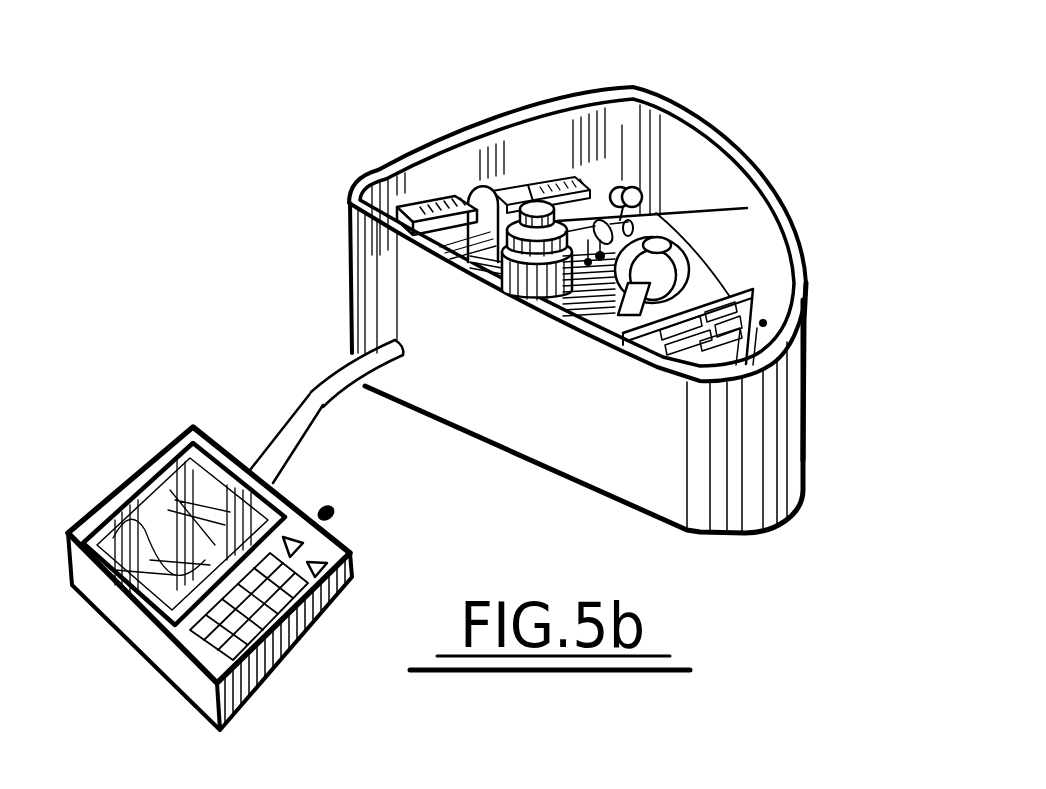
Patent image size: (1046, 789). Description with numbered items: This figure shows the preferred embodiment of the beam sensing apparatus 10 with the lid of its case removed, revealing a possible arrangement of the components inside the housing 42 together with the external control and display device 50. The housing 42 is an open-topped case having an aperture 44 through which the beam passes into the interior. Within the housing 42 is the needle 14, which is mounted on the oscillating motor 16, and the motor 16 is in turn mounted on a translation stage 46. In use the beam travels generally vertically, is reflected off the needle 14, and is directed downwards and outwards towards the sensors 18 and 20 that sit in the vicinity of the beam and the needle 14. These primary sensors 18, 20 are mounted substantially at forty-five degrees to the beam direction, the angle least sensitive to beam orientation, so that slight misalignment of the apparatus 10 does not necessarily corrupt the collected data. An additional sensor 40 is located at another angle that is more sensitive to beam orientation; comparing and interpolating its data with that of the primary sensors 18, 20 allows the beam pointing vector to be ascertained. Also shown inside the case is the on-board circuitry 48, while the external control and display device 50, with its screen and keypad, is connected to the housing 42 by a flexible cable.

The beam sensing apparatus 10 is at (748, 565).
The needle 14 is at (692, 207).
The oscillating motor 16 is at (528, 185).
The sensor 18 is at (630, 306).
The sensor 20 is at (603, 280).
The additional sensor 40 is at (625, 190).
The housing 42 is at (760, 458).
The aperture 44 is at (684, 281).
The translation stage 46 is at (417, 210).
The on-board circuitry 48 is at (751, 326).
The external control and display device 50 is at (302, 531).